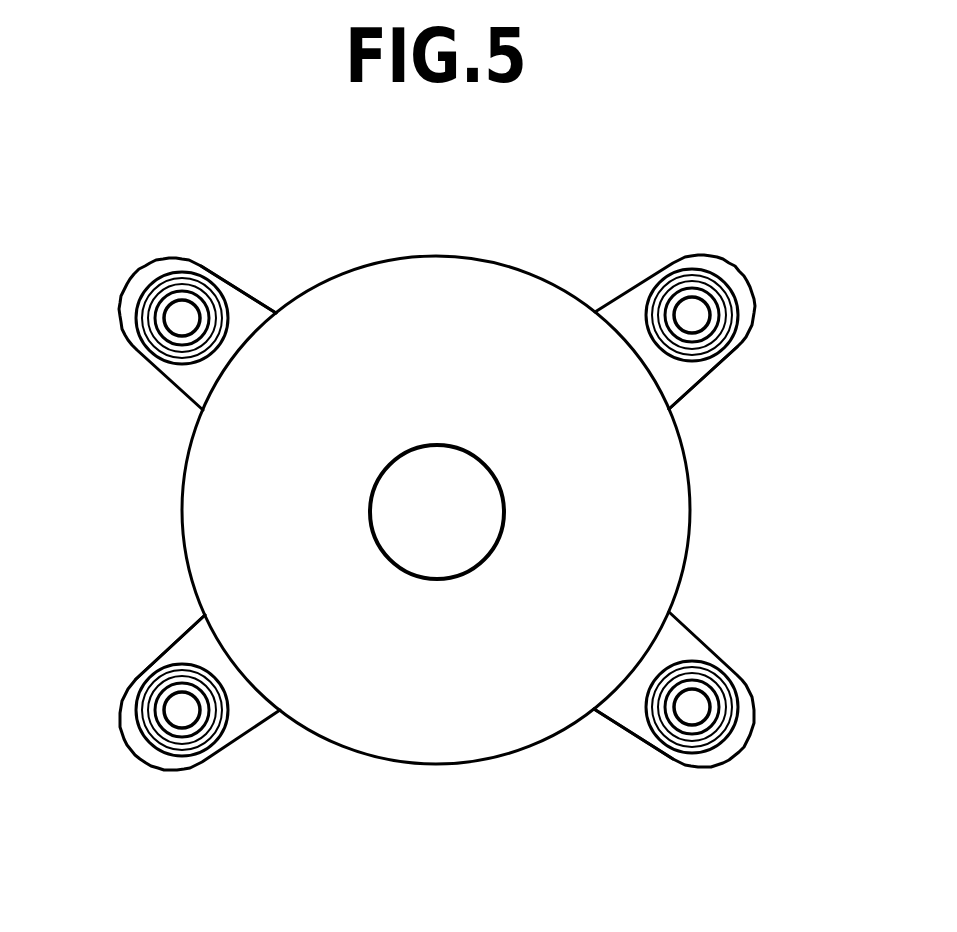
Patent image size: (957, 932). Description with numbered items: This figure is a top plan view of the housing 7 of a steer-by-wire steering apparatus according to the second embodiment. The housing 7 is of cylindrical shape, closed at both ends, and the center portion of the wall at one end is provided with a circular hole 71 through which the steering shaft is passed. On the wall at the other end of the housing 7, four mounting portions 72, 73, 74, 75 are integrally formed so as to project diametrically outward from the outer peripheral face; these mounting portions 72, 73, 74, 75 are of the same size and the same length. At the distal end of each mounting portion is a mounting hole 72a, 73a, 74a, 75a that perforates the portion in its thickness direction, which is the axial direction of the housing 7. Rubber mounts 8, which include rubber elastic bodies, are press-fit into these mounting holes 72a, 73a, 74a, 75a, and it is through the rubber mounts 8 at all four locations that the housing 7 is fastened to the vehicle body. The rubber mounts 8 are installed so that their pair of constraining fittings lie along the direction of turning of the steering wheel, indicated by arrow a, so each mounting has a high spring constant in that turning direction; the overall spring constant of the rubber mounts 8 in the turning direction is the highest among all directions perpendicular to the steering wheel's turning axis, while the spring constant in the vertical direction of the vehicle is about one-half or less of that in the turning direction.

The housing 7 is at (166, 509).
The circular hole 71 is at (485, 553).
The mounting portion 72 is at (200, 382).
The mounting portion 73 is at (680, 387).
The mounting portion 74 is at (680, 640).
The mounting portion 75 is at (198, 643).
The mounting hole 72a is at (133, 330).
The mounting hole 73a is at (740, 328).
The mounting hole 74a is at (740, 700).
The mounting hole 75a is at (132, 700).
The rubber mount 8 is at (212, 269).
The arrow indicating direction of turning of the steering wheel a is at (154, 218).